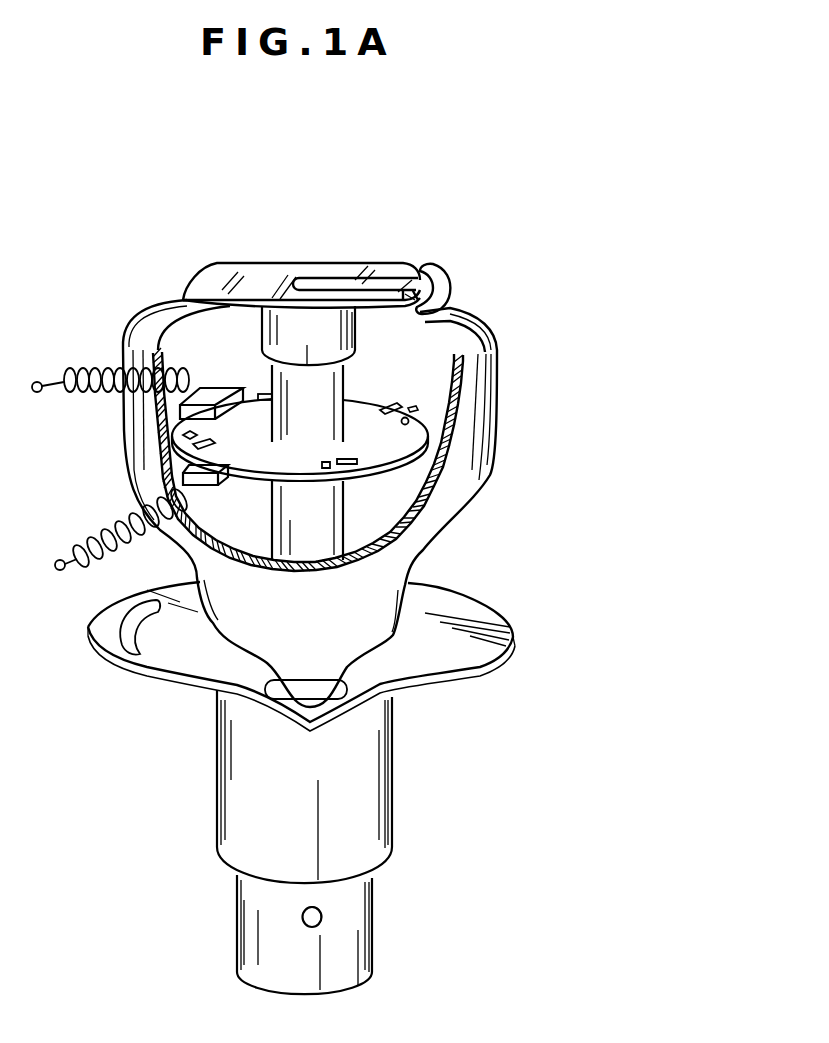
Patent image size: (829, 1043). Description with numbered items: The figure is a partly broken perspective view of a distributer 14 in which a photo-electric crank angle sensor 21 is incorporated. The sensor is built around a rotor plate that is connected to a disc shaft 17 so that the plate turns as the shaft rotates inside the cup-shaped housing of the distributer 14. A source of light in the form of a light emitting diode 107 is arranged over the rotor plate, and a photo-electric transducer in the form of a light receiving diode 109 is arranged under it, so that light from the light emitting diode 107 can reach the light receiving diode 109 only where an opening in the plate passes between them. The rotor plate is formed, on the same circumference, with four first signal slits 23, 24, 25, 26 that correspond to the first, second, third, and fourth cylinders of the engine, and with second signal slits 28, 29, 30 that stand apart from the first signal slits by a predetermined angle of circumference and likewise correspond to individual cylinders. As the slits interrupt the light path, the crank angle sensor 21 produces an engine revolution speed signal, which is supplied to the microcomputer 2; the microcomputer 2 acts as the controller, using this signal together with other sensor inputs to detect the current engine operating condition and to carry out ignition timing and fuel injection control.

The distributer 14 is at (520, 318).
The disc shaft 17 is at (348, 371).
The crank angle sensor 21 is at (150, 342).
The first signal slit 23 is at (260, 394).
The first signal slit 24 is at (395, 408).
The microcomputer 2 is at (415, 410).
The second signal slit 28 is at (408, 422).
The first signal slit 25 is at (352, 463).
The second signal slit 29 is at (328, 466).
The second signal slit 30 is at (185, 435).
The first signal slit 26 is at (196, 446).
The light emitting diode 107 is at (186, 360).
The light receiving diode 109 is at (183, 477).